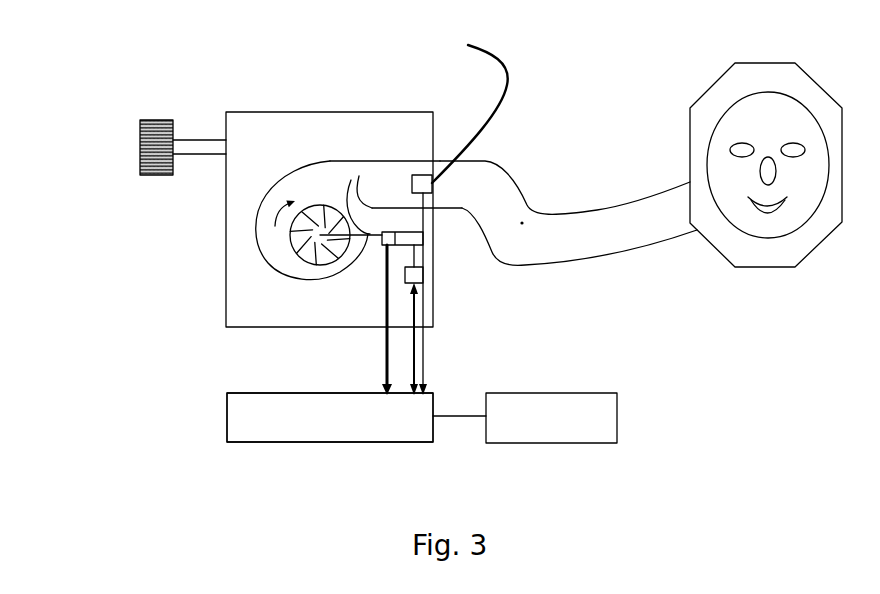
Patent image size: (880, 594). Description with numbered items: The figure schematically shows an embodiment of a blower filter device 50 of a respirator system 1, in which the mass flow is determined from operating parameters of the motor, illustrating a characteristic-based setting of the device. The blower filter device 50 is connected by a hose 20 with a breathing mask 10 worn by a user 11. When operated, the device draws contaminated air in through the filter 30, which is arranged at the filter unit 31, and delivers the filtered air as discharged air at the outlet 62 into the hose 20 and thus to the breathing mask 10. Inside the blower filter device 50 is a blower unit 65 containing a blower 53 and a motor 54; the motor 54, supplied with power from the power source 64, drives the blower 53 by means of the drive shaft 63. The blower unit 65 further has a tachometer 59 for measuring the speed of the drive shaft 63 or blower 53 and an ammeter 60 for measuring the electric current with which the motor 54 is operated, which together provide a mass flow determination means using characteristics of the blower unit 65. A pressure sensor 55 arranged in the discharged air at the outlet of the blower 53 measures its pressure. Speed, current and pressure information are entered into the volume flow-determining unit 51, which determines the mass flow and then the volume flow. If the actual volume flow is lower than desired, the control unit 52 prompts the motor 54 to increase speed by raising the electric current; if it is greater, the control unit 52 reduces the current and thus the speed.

The respirator system 1 is at (199, 378).
The breathing mask 10 is at (752, 267).
The user 11 is at (752, 113).
The hose 20 is at (595, 211).
The filter 30 is at (120, 147).
The filter unit 31 is at (140, 158).
The blower filter device 50 is at (338, 112).
The volume flow-determining unit 51 is at (356, 435).
The control unit 52 is at (370, 442).
The blower 53 is at (315, 207).
The motor 54 is at (423, 237).
The pressure sensor 55 is at (432, 185).
The tachometer 59 is at (358, 210).
The ammeter 60 is at (424, 275).
The outlet 62 is at (470, 102).
The drive shaft 63 is at (351, 180).
The power source 64 is at (512, 393).
The blower unit 65 is at (197, 279).